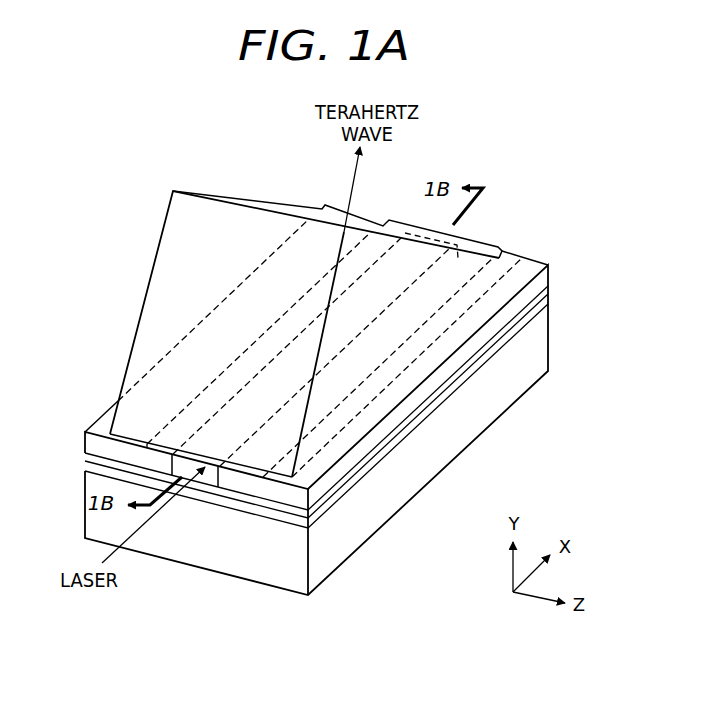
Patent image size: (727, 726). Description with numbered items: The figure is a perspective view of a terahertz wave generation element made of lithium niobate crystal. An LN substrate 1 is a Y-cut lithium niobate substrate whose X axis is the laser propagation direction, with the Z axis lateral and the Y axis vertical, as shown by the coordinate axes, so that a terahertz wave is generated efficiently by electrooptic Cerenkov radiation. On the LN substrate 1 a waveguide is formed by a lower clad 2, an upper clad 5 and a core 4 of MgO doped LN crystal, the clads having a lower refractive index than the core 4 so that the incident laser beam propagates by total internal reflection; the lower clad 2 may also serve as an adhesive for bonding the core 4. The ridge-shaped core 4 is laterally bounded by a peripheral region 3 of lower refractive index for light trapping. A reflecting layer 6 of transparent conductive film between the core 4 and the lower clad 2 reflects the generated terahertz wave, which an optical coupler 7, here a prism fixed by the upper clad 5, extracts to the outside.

The LN substrate 1 is at (545, 353).
The lower clad 2 is at (549, 299).
The peripheral region 3 is at (530, 263).
The waveguide core 4 is at (208, 480).
The upper clad 5 is at (176, 426).
The reflecting layer 6 is at (549, 287).
The optical coupler 7 is at (217, 210).